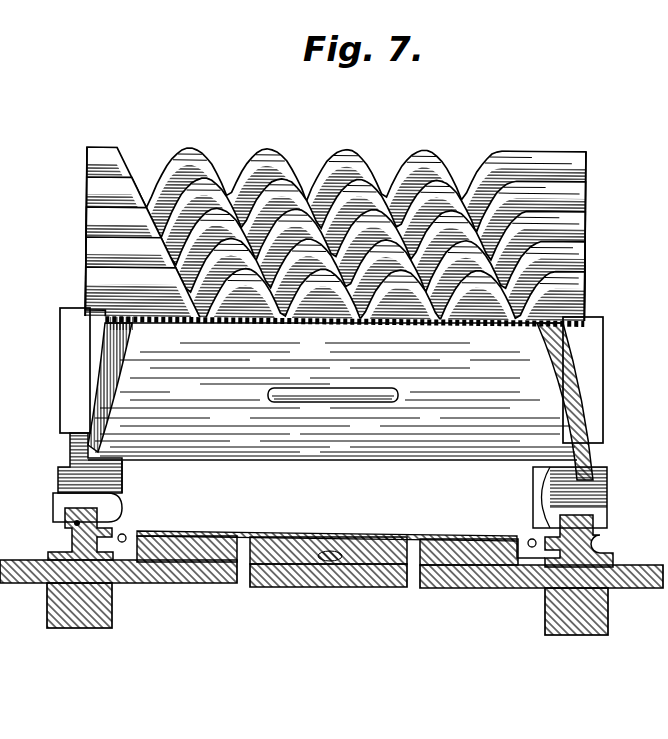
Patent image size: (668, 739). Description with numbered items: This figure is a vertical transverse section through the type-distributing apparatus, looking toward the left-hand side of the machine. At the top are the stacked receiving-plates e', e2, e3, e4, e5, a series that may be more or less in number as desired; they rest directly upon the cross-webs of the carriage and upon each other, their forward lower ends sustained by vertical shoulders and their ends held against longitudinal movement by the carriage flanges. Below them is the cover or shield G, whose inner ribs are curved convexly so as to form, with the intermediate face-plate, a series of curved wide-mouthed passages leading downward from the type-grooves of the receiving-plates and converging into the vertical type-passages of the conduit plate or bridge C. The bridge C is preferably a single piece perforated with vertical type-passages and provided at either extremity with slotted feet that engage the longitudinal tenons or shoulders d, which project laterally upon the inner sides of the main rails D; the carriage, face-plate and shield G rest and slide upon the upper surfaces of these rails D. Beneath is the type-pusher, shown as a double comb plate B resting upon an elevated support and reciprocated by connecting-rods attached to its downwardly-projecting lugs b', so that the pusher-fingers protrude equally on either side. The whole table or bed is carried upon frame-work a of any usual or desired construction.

The receiving-plate e' is at (342, 246).
The receiving-plate e2 is at (335, 246).
The receiving-plate e3 is at (335, 246).
The receiving-plate e4 is at (335, 246).
The receiving-plate e5 is at (335, 246).
The cover or shield G is at (331, 394).
The pin y' is at (333, 387).
The vertical conduit plate or bridge C is at (330, 480).
The double comb plate B is at (330, 541).
The downwardly-projecting lug b' is at (330, 550).
The base plate A is at (331, 574).
The frame-work a is at (327, 609).
The main rail D is at (606, 531).
The tenon or shoulder d is at (75, 527).